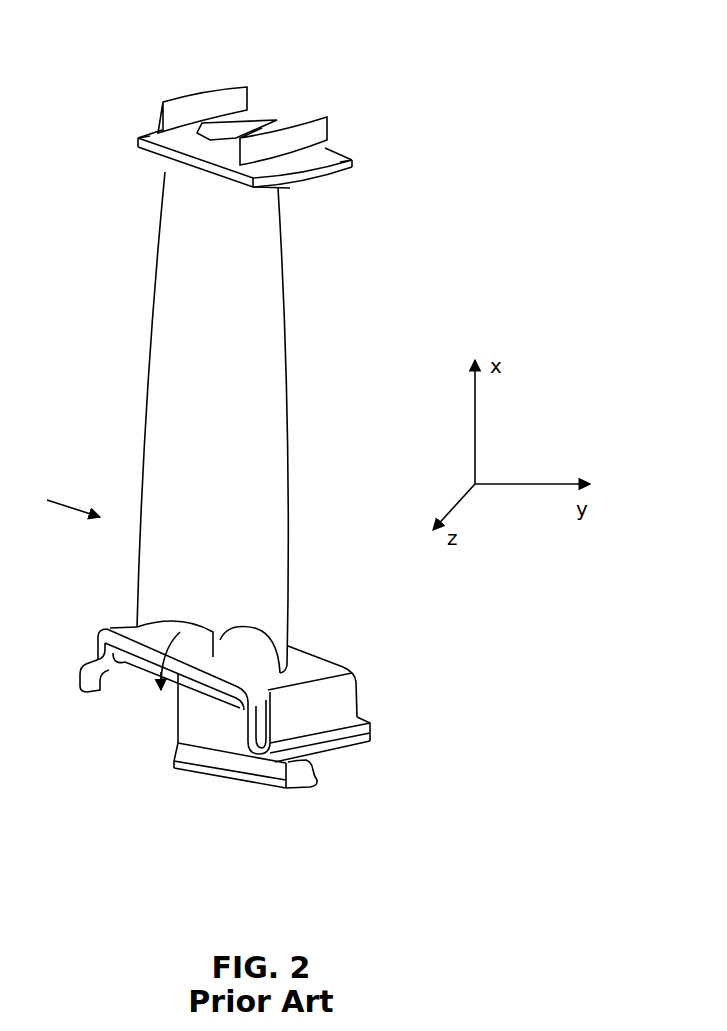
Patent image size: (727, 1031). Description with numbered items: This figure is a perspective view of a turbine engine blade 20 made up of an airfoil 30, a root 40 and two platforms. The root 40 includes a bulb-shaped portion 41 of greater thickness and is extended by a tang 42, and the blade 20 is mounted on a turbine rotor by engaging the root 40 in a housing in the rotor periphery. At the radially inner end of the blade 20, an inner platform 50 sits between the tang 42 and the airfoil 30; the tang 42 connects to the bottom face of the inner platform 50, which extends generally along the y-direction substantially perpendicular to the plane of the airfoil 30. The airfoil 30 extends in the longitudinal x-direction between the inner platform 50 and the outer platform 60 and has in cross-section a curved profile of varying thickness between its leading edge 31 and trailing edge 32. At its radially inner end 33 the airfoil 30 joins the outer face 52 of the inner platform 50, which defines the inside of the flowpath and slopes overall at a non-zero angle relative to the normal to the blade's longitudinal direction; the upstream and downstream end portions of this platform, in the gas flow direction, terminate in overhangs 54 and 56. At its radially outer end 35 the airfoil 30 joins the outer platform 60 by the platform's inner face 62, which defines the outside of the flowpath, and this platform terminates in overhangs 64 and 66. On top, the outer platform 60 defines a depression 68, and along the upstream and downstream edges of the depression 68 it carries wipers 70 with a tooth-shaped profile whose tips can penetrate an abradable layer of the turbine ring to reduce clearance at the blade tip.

The turbine engine blade 20 is at (128, 412).
The airfoil 30 is at (268, 383).
The leading edge 31 is at (152, 303).
The trailing edge 32 is at (284, 318).
The radially inner end 33 is at (132, 619).
The radially outer end 35 is at (294, 189).
The root 40 is at (329, 778).
The bulb-shaped portion 41 is at (302, 778).
The tang 42 is at (205, 717).
The inner platform 50 is at (312, 662).
The outer face of the inner platform 52 is at (213, 650).
The overhang 54 is at (102, 655).
The overhang 56 is at (343, 700).
The outer platform 60 is at (150, 93).
The inner face of the outer platform 62 is at (197, 172).
The overhang 64 is at (151, 137).
The overhang 66 is at (323, 152).
The depression 68 is at (238, 130).
The wipers 70 is at (247, 84).